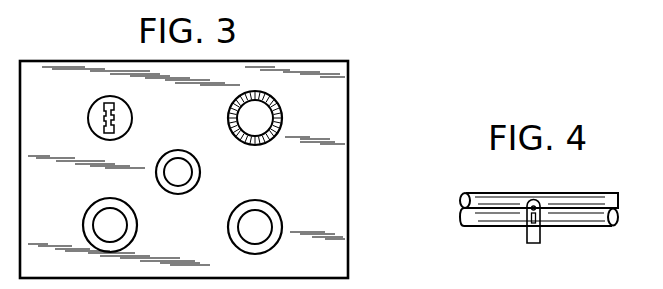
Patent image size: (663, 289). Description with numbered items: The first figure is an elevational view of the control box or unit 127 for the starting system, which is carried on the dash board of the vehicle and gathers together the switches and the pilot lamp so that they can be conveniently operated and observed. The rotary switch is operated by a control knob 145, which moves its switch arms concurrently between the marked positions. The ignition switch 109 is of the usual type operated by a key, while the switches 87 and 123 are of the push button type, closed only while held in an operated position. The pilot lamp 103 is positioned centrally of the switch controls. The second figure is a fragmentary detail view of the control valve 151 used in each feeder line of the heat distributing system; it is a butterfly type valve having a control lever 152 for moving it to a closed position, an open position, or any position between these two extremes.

In FIG. 3, the switch 87 is at (262, 224).
In FIG. 3, the pilot lamp 103 is at (187, 176).
In FIG. 3, the ignition switch 109 is at (89, 117).
In FIG. 3, the switch 123 is at (117, 232).
In FIG. 3, the control box or unit 127 is at (348, 200).
In FIG. 3, the control knob 145 is at (263, 121).
In FIG. 4, the control valve 151 is at (520, 197).
In FIG. 4, the control lever 152 is at (535, 242).